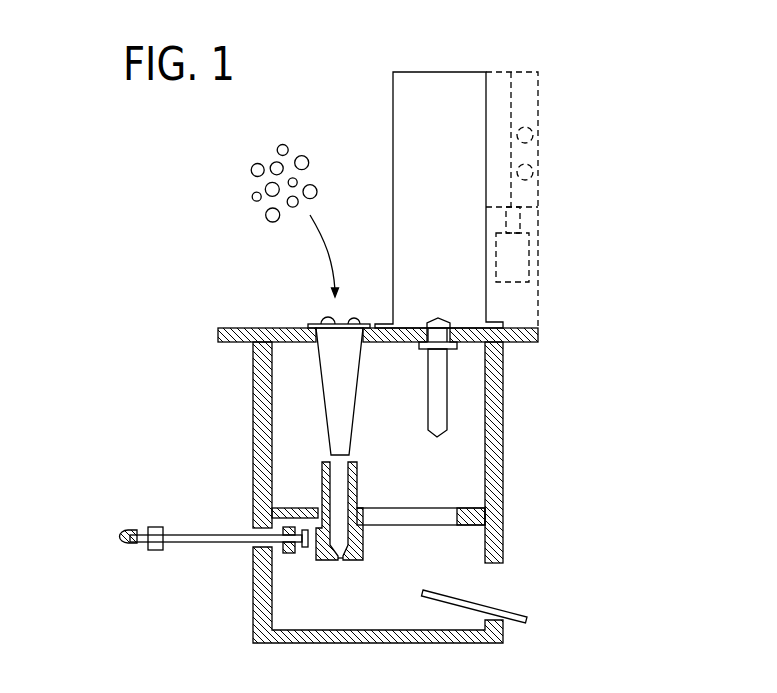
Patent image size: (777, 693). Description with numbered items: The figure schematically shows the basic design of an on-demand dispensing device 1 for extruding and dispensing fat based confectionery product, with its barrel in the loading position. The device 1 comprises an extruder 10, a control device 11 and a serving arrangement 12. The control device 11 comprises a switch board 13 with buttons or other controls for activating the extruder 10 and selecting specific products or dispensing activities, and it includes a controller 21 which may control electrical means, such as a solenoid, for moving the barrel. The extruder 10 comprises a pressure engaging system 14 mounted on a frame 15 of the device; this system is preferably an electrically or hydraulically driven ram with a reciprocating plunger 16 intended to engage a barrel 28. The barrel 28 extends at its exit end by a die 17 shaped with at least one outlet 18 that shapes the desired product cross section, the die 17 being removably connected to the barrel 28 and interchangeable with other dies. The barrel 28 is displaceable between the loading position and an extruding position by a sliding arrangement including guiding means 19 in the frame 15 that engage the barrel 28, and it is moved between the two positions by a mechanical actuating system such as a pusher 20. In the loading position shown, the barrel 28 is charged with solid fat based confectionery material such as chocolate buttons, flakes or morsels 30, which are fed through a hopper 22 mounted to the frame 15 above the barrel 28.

The on-demand dispensing device 1 is at (612, 281).
The extruder 10 is at (230, 294).
The control device 11 is at (555, 78).
The serving arrangement 12 is at (553, 560).
The switch board 13 is at (524, 84).
The pressure engaging system 14 is at (452, 390).
The frame 15 is at (504, 472).
The reciprocating plunger 16 is at (439, 415).
The die 17 is at (312, 558).
The outlet 18 is at (340, 562).
The guiding means 19 is at (413, 517).
The pusher 20 is at (109, 528).
The controller 21 is at (523, 280).
The hopper 22 is at (320, 383).
The barrel 28 is at (322, 482).
The chocolate buttons, flakes or morsels 30 is at (240, 140).